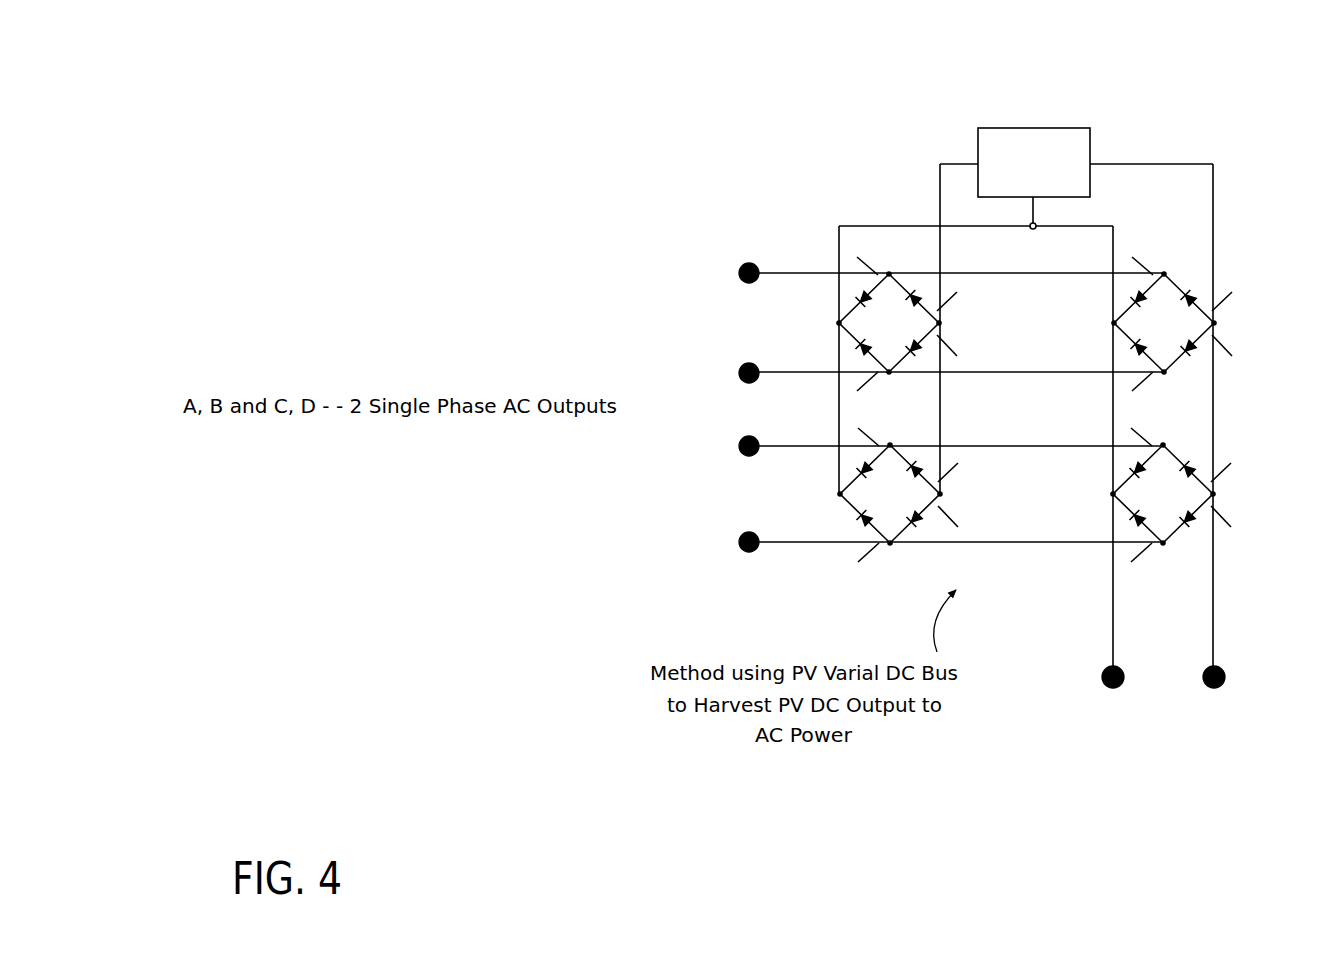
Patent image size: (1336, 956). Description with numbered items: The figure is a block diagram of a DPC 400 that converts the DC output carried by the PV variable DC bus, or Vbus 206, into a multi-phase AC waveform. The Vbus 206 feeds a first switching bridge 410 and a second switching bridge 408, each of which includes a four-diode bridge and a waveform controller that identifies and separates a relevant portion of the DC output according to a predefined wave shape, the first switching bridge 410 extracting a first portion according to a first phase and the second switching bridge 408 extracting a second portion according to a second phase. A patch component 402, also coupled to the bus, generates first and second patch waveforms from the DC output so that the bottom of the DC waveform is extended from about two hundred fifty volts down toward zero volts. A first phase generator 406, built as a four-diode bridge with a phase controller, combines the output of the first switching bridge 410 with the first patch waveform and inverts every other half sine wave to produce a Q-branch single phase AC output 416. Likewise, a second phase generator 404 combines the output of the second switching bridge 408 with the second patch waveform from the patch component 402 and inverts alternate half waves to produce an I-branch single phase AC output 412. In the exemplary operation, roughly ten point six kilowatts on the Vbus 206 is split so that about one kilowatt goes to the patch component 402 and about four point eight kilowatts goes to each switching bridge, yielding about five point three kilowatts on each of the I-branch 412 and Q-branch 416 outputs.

The DPC 400 is at (1142, 52).
The patch component 402 is at (1005, 126).
The second phase generator 404 is at (910, 337).
The first phase generator 406 is at (910, 508).
The second switching bridge 408 is at (1185, 337).
The first switching bridge 410 is at (1185, 508).
The I-branch single phase AC output 412 is at (490, 291).
The Q-branch single phase AC output 416 is at (528, 522).
The Vbus 206 is at (1157, 630).